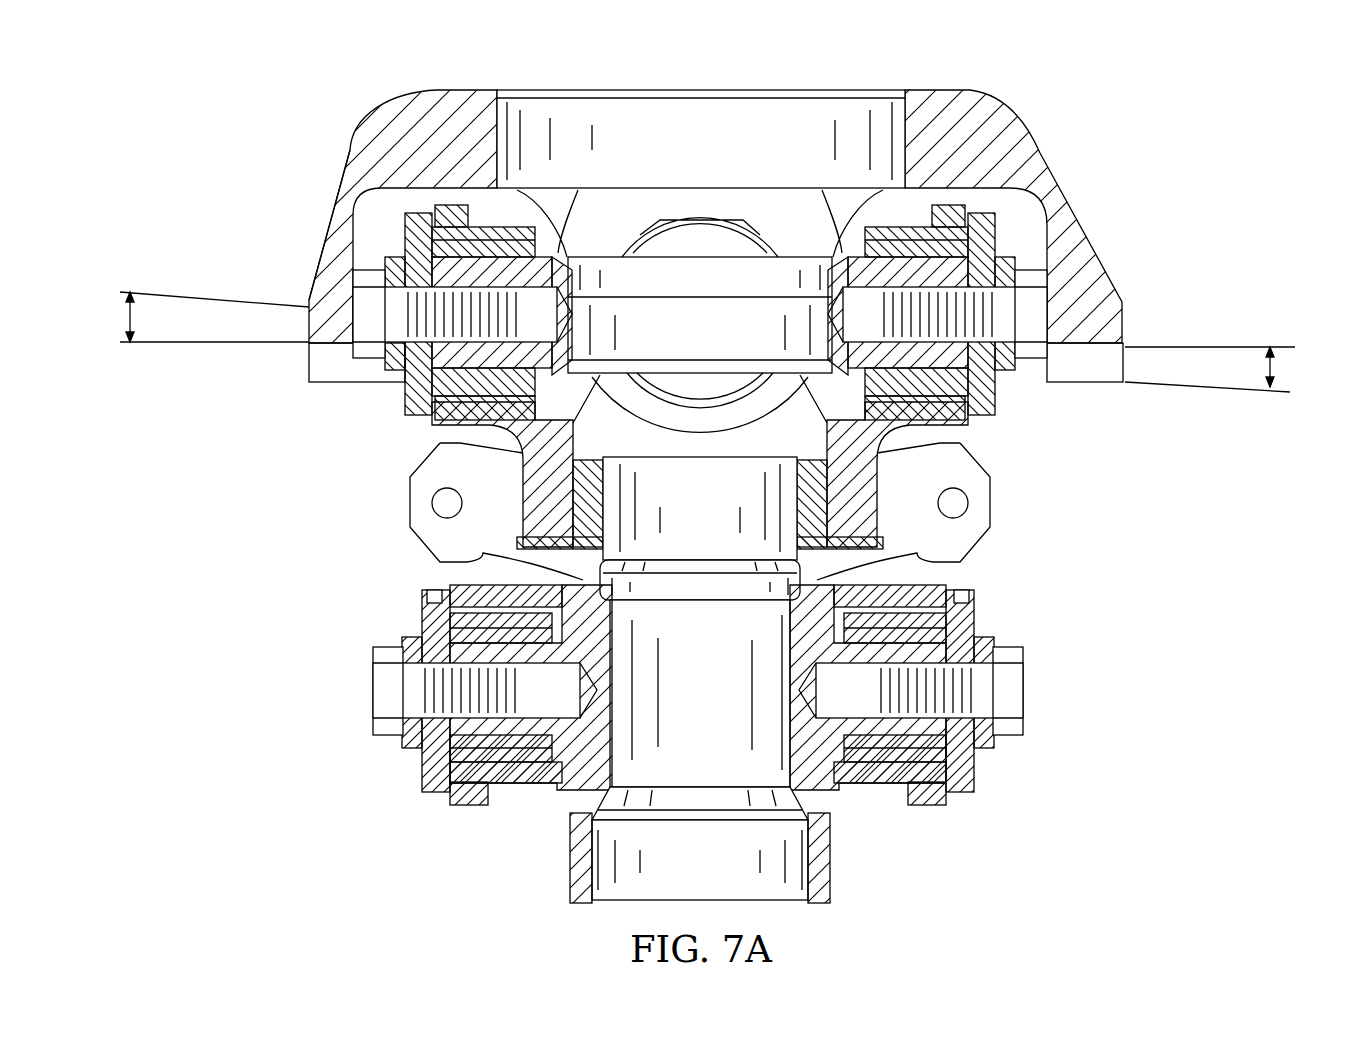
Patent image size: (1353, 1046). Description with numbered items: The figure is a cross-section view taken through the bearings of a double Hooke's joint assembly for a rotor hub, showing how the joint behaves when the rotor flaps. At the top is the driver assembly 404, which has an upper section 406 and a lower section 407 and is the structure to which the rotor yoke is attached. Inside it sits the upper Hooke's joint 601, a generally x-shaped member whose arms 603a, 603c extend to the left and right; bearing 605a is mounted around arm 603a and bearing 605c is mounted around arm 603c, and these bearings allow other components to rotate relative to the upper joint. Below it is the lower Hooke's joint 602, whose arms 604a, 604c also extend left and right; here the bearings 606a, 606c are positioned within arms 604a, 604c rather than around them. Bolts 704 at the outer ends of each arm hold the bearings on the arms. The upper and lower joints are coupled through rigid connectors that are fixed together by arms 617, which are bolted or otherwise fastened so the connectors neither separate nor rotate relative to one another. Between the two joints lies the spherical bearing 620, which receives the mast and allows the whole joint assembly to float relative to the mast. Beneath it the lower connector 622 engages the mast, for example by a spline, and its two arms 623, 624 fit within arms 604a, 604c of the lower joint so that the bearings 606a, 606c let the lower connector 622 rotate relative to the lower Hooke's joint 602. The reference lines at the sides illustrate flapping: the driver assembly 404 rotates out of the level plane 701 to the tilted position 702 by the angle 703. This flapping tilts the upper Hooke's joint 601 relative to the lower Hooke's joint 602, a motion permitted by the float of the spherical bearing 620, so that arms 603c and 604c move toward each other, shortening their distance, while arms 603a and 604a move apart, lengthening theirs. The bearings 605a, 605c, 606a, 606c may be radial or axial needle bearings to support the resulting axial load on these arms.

The driver assembly 404 is at (285, 101).
The upper section 406 is at (308, 290).
The lower section 407 is at (309, 362).
The upper Hooke's joint 601 is at (612, 258).
The lower Hooke's joint 602 is at (565, 787).
The arm 603a is at (493, 243).
The arm 603c is at (948, 275).
The arm 604a is at (433, 797).
The arm 604c is at (882, 790).
The bearing 605a is at (447, 278).
The bearing 605c is at (902, 243).
The bearing 606a is at (515, 765).
The bearing 606c is at (930, 765).
The arms 617 is at (410, 490).
The spherical bearing 620 is at (597, 500).
The lower connector 622 is at (830, 872).
The arm 623 is at (483, 727).
The arm 624 is at (915, 727).
The level plane 701 is at (155, 347).
The tilted position 702 is at (180, 292).
The angle 703 is at (126, 318).
The bolts 704 is at (355, 232).